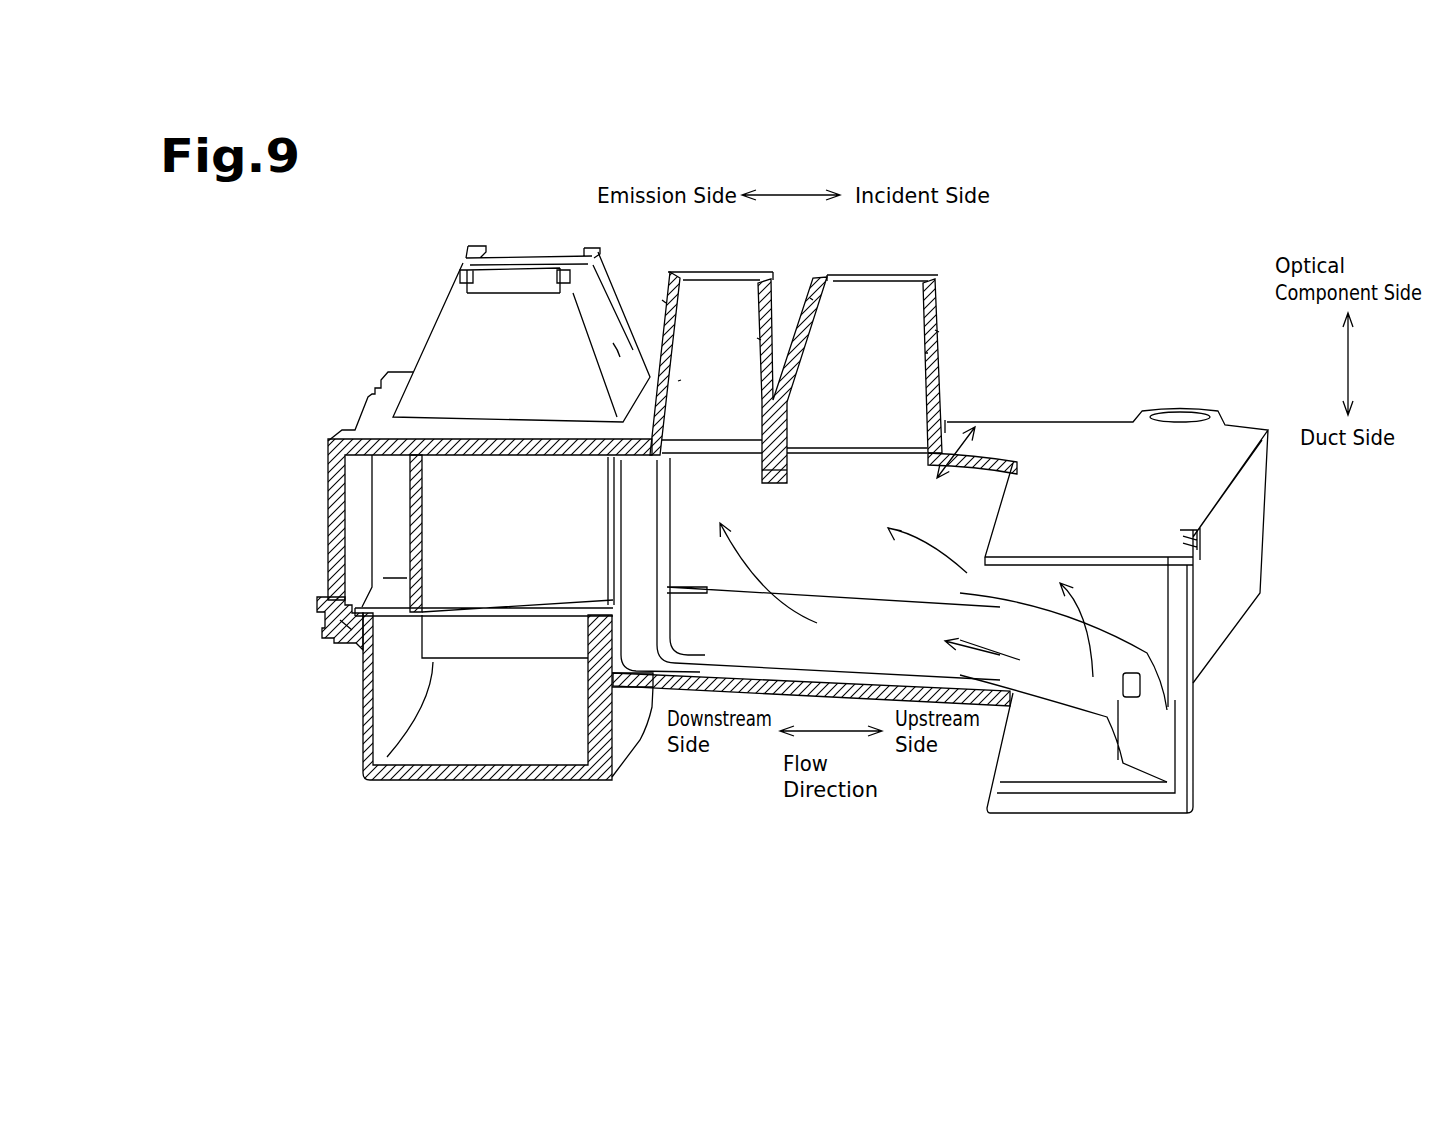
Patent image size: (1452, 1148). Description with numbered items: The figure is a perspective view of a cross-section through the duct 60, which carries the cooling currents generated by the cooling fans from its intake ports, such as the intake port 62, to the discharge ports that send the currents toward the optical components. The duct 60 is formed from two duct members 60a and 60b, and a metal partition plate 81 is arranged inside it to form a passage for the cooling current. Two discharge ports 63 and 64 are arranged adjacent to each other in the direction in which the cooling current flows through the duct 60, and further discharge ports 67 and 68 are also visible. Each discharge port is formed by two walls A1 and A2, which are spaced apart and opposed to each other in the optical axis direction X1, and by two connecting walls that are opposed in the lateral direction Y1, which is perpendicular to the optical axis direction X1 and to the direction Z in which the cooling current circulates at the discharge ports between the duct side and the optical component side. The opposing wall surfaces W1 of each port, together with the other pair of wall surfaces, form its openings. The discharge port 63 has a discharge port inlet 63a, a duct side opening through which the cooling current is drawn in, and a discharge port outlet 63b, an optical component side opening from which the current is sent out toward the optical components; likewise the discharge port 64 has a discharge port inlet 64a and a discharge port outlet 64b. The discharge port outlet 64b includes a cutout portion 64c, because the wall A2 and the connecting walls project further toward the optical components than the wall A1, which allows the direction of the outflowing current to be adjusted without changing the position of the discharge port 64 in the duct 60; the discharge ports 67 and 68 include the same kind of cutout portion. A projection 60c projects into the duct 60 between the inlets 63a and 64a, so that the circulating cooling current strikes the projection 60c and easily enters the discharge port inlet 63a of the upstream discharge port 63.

The duct 60 is at (1133, 214).
The duct member 60a is at (366, 699).
The duct member 60b is at (336, 540).
The projection 60c is at (764, 478).
The intake port 62 is at (1209, 743).
The discharge port 63 is at (935, 259).
The discharge port inlet 63a is at (925, 452).
The discharge port outlet 63b is at (925, 290).
The discharge port 64 is at (666, 253).
The discharge port inlet 64a is at (752, 452).
The discharge port outlet 64b is at (752, 291).
The cutout portion 64c is at (762, 276).
The discharge port 67 is at (472, 231).
The discharge port 68 is at (441, 338).
The metal partition plate 81 is at (655, 537).
The wall A1 is at (759, 339).
The wall A2 is at (666, 303).
The wall surfaces W1 is at (758, 386).
The optical axis direction X1 is at (794, 195).
The lateral direction Y1 is at (976, 444).
The direction Z is at (1349, 362).